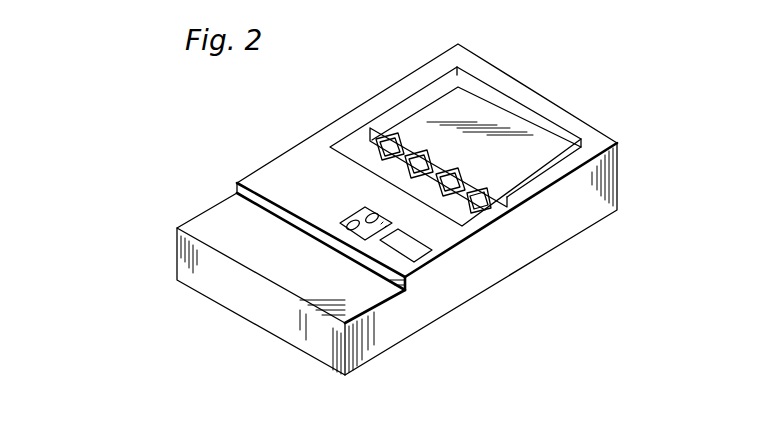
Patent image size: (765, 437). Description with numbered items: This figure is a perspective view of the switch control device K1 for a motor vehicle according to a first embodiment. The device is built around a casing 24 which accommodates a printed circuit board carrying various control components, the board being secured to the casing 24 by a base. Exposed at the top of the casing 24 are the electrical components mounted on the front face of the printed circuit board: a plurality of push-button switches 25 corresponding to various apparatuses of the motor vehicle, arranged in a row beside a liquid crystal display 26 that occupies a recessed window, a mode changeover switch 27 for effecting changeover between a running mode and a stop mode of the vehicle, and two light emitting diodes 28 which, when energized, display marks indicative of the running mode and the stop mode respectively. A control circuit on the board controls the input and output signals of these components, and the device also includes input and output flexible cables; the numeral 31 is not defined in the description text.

The switch control device K1 is at (157, 207).
The casing 24 is at (418, 305).
The push-button switches 25 is at (357, 153).
The liquid crystal display 26 is at (527, 135).
The mode changeover switch 27 is at (433, 260).
The light emitting diodes 28 is at (350, 210).
The key buttons 31 is at (418, 160).